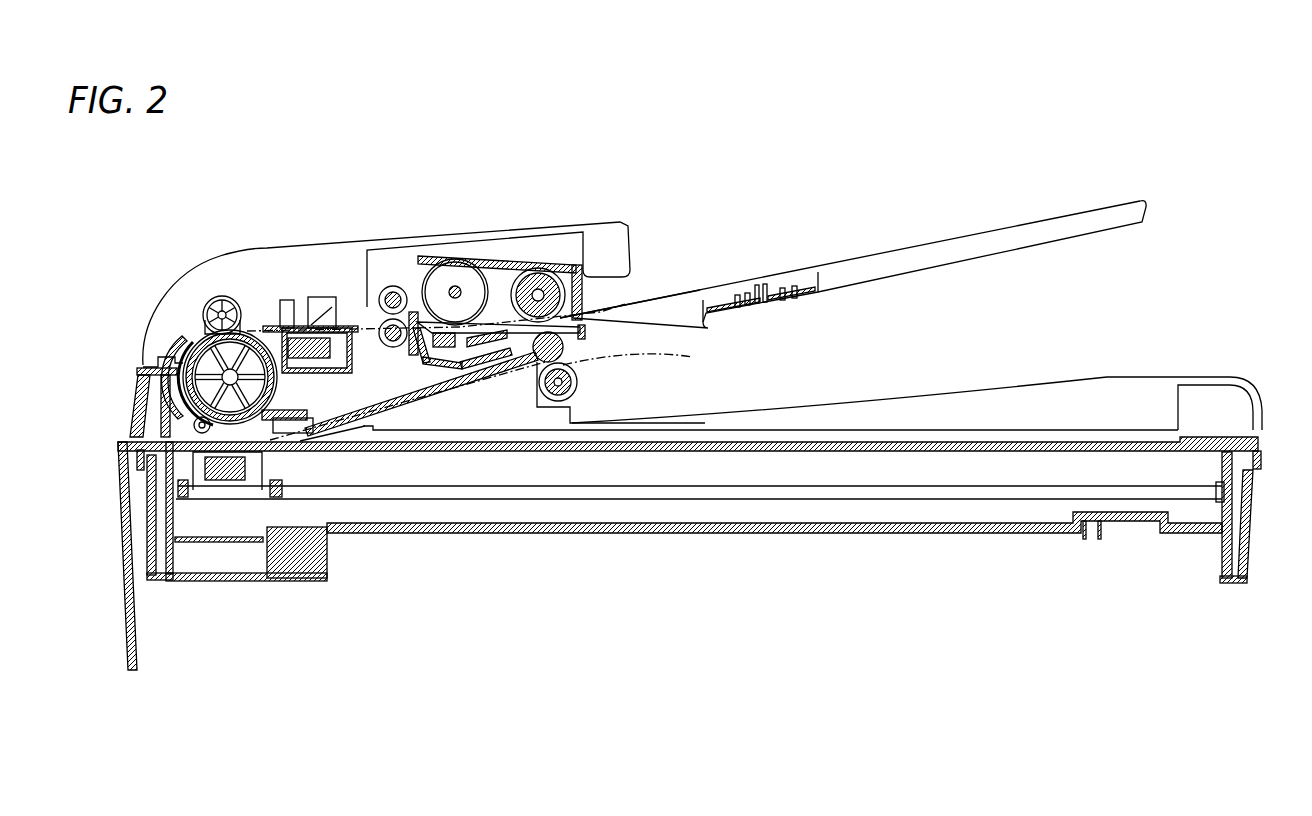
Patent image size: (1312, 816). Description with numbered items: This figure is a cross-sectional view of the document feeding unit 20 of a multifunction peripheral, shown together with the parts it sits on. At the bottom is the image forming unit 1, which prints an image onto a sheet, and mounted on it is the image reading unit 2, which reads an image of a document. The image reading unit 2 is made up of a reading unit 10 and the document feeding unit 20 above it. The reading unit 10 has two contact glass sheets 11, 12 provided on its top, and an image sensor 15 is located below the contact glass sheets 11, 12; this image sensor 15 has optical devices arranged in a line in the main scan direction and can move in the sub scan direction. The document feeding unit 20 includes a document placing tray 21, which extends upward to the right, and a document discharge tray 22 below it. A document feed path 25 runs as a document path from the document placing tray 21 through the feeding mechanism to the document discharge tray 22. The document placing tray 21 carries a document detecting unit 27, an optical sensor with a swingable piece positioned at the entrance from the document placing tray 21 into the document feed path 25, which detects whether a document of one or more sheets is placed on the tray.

The image forming unit 1 is at (103, 582).
The image reading unit 2 is at (63, 335).
The reading unit 10 is at (103, 442).
The contact glass sheet 11 is at (590, 452).
The contact glass sheet 12 is at (300, 453).
The image sensor 15 is at (235, 478).
The document feeding unit 20 is at (662, 292).
The document placing tray 21 is at (1121, 214).
The document discharge tray 22 is at (972, 404).
The document feed path 25 is at (380, 313).
The document detecting unit 27 is at (585, 314).